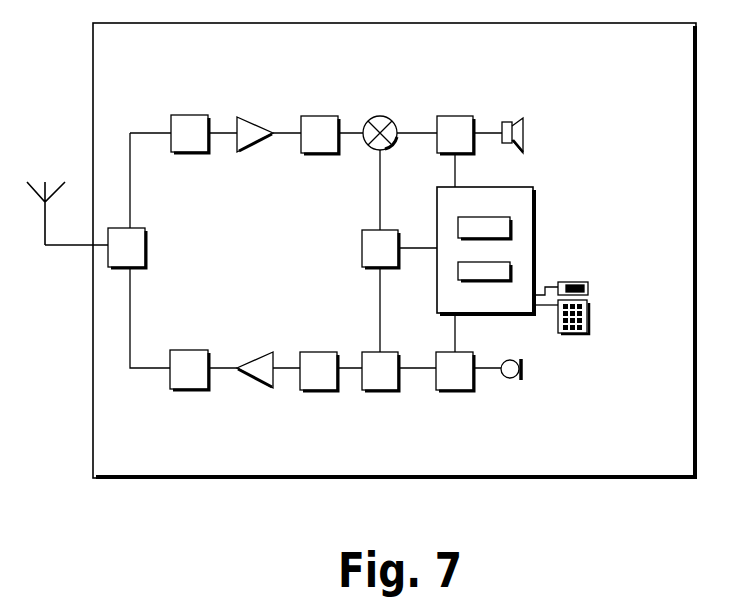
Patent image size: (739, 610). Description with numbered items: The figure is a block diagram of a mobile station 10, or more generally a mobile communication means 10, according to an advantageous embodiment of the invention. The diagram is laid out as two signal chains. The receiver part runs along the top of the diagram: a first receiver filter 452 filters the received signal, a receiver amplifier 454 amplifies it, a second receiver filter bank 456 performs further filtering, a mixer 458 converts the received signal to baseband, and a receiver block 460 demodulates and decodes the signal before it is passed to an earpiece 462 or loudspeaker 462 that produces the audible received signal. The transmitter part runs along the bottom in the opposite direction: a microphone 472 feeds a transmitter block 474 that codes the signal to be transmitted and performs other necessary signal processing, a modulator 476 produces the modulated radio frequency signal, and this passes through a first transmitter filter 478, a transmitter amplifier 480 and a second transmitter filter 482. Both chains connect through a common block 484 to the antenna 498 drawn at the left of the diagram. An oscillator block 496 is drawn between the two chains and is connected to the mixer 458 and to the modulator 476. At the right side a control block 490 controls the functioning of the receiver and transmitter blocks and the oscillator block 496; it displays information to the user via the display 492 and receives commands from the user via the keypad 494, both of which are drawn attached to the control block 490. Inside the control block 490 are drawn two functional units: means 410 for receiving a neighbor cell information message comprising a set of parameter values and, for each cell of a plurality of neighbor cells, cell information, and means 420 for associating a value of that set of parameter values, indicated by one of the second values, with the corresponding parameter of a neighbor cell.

The mobile station 10 is at (613, 479).
The means for receiving a neighbor cell information message 410 is at (512, 226).
The means for associating a value 420 is at (512, 268).
The first receiver filter 452 is at (188, 115).
The receiver amplifier 454 is at (253, 119).
The second receiver filter bank 456 is at (319, 117).
The mixer 458 is at (384, 116).
The receiver block 460 is at (454, 116).
The earpiece 462 is at (509, 122).
The microphone 472 is at (513, 380).
The transmitter block 474 is at (459, 391).
The modulator 476 is at (384, 391).
The first transmitter filter 478 is at (322, 391).
The transmitter amplifier 480 is at (262, 388).
The second transmitter filter 482 is at (191, 390).
The duplexer 484 is at (146, 247).
The control block 490 is at (512, 313).
The display 492 is at (590, 288).
The keypad 494 is at (590, 323).
The oscillator block 496 is at (362, 250).
The antenna 498 is at (46, 194).